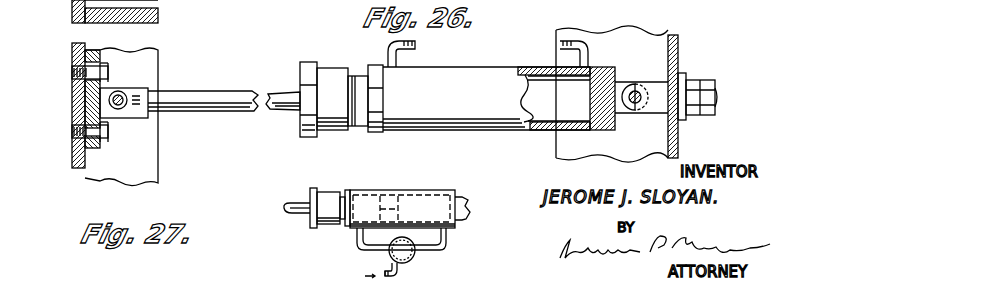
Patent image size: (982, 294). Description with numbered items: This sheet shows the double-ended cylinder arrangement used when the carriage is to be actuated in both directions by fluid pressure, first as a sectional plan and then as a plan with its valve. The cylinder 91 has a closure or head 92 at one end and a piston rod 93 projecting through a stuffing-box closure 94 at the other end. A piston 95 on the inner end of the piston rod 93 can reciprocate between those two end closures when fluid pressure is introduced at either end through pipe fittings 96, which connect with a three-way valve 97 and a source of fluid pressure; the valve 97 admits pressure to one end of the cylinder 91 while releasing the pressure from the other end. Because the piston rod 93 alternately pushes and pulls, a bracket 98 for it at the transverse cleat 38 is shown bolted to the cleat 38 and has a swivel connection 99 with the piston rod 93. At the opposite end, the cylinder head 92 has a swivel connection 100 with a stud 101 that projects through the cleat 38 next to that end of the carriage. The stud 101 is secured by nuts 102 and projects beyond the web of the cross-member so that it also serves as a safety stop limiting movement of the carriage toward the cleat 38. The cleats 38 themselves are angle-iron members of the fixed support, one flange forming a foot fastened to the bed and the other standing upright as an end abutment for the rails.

In FIG. 26, the transverse cleat 38 is at (107, 170).
In FIG. 26, the cylinder 91 is at (480, 130).
In FIG. 27, the cylinder 91 is at (432, 190).
In FIG. 26, the closure or head 92 is at (618, 84).
In FIG. 27, the closure or head 92 is at (465, 196).
In FIG. 26, the piston rod 93 is at (233, 112).
In FIG. 27, the piston rod 93 is at (305, 205).
In FIG. 26, the stuffing-box closure 94 is at (346, 64).
In FIG. 27, the stuffing-box closure 94 is at (325, 190).
In FIG. 27, the piston 95 is at (387, 200).
In FIG. 26, the pipe fitting 96 is at (400, 47).
In FIG. 27, the pipe fitting 96 is at (357, 243).
In FIG. 27, the three-way valve 97 is at (415, 257).
In FIG. 26, the bracket 98 is at (100, 57).
In FIG. 26, the swivel connection 99 is at (120, 97).
In FIG. 26, the swivel connection 100 is at (633, 107).
In FIG. 26, the stud 101 is at (680, 46).
In FIG. 26, the nut 102 is at (710, 82).